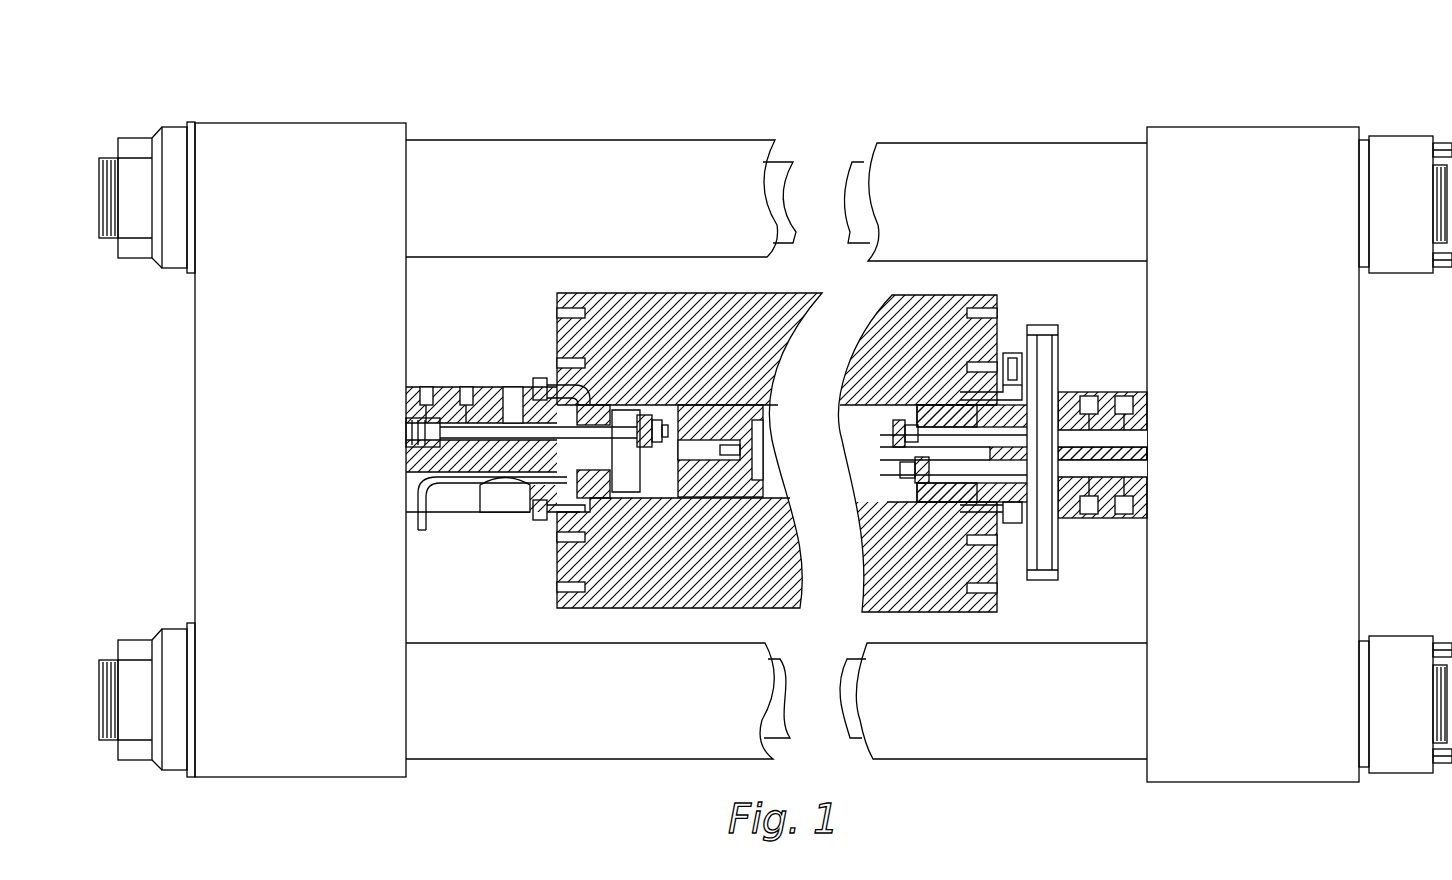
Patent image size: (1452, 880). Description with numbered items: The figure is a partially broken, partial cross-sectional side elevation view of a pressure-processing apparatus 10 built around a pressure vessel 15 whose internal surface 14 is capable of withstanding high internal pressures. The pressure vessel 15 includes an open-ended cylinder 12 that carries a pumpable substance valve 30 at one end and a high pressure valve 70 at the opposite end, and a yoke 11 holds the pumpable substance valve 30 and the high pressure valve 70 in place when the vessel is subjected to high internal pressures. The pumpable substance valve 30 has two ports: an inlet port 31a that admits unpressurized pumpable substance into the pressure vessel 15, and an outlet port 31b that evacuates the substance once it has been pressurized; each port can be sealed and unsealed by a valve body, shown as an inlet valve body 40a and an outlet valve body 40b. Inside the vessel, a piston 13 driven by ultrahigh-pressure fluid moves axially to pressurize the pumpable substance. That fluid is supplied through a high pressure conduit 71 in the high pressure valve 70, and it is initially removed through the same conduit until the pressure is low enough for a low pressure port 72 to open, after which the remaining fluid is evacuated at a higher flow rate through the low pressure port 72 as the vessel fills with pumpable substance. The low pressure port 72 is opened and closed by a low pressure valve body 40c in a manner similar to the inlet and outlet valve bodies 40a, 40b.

The pressure-processing apparatus 10 is at (968, 122).
The yoke 11 is at (1216, 127).
The open-ended cylinder 12 is at (988, 295).
The piston 13 is at (665, 400).
The internal surface 14 is at (650, 498).
The pressure vessel 15 is at (540, 356).
The pumpable substance valve 30 is at (1063, 392).
The inlet port 31a is at (1003, 522).
The outlet port 31b is at (933, 403).
The inlet valve body 40a is at (915, 480).
The outlet valve body 40b is at (893, 432).
The low pressure valve body 40c is at (655, 450).
The high pressure valve 70 is at (480, 387).
The high pressure conduit 71 is at (428, 518).
The low pressure port 72 is at (636, 405).